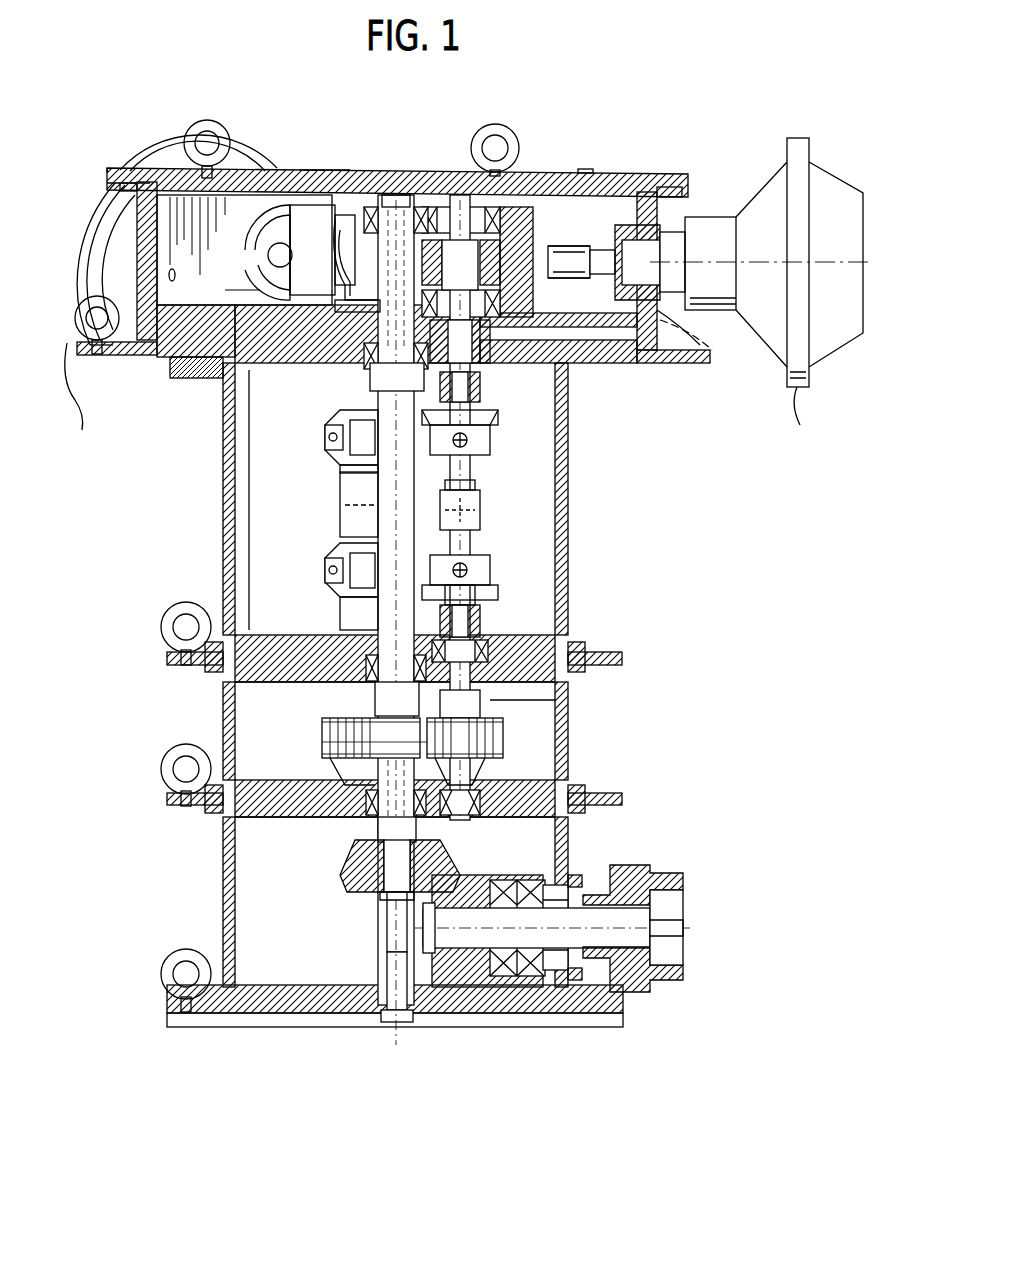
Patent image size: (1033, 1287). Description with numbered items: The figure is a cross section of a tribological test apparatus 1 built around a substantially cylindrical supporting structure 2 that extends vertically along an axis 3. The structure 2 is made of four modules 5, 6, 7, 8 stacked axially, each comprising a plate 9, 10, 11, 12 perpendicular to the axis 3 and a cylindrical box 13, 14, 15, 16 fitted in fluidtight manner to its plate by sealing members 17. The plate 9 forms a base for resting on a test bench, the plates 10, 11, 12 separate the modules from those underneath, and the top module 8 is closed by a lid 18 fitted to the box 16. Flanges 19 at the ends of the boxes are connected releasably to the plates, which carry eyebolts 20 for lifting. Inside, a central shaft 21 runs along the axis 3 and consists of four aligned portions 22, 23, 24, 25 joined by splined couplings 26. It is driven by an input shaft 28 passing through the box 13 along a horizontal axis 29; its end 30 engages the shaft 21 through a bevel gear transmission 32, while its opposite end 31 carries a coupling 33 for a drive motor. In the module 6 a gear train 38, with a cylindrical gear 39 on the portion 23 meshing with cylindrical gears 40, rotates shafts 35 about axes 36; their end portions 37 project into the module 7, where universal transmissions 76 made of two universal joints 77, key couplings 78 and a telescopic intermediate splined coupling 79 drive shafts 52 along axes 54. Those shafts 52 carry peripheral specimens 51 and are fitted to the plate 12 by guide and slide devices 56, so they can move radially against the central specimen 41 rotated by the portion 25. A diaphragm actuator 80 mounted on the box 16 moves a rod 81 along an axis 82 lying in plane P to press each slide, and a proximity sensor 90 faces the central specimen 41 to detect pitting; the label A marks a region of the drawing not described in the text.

The tribological test apparatus 1 is at (712, 115).
The supporting structure 2 is at (173, 1029).
The axis 3 is at (392, 974).
The module 5 is at (220, 864).
The module 6 is at (220, 739).
The module 7 is at (220, 511).
The module 8 is at (290, 167).
The plate 9 is at (312, 1013).
The plate 10 is at (270, 817).
The plate 11 is at (225, 702).
The plate 12 is at (176, 360).
The cylindrical box 13 is at (222, 906).
The cylindrical box 14 is at (225, 721).
The cylindrical box 15 is at (221, 550).
The cylindrical box 16 is at (128, 222).
The sealing member 17 is at (225, 418).
The lid 18 is at (326, 168).
The flange 19 is at (122, 170).
The eyebolt 20 is at (205, 120).
The central shaft 21 is at (383, 947).
The shaft portion 22 is at (386, 917).
The shaft portion 23 is at (382, 820).
The shaft portion 24 is at (378, 484).
The shaft portion 25 is at (370, 378).
The splined coupling 26 is at (372, 388).
The input shaft 28 is at (579, 957).
The horizontal axis 29 is at (683, 932).
The end 30 is at (452, 962).
The end 31 is at (597, 920).
The bevel gear transmission 32 is at (455, 862).
The coupling 33 is at (660, 873).
The shaft 35 is at (484, 702).
The axis 36 is at (568, 692).
The end portion 37 is at (482, 600).
The gear train 38 is at (320, 750).
The cylindrical gear 39 is at (378, 734).
The cylindrical gear 40 is at (500, 742).
The central specimen 41 is at (386, 195).
The peripheral specimen 51 is at (512, 207).
The shaft 52 is at (448, 197).
The axis 54 is at (470, 200).
The guide and slide device 56 is at (598, 352).
The universal transmission 76 is at (338, 573).
The universal joint 77 is at (495, 430).
The key coupling 78 is at (472, 390).
The intermediate splined coupling 79 is at (482, 500).
The diaphragm actuator 80 is at (800, 437).
The rod 81 is at (603, 248).
The axis 82 is at (752, 258).
The proximity sensor 90 is at (358, 205).
The plane P is at (712, 253).
The flange portion A is at (705, 347).